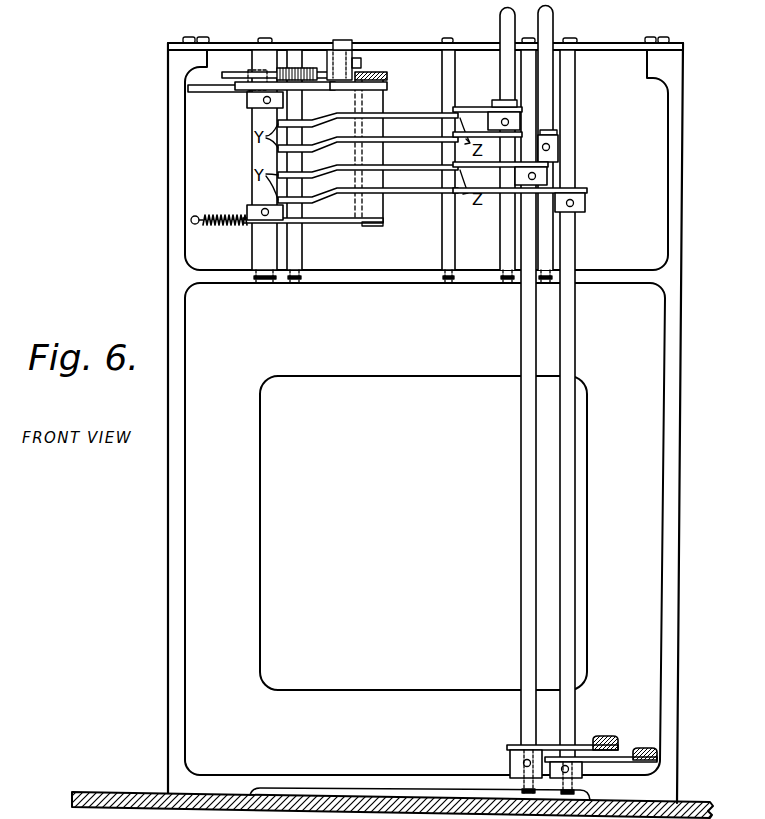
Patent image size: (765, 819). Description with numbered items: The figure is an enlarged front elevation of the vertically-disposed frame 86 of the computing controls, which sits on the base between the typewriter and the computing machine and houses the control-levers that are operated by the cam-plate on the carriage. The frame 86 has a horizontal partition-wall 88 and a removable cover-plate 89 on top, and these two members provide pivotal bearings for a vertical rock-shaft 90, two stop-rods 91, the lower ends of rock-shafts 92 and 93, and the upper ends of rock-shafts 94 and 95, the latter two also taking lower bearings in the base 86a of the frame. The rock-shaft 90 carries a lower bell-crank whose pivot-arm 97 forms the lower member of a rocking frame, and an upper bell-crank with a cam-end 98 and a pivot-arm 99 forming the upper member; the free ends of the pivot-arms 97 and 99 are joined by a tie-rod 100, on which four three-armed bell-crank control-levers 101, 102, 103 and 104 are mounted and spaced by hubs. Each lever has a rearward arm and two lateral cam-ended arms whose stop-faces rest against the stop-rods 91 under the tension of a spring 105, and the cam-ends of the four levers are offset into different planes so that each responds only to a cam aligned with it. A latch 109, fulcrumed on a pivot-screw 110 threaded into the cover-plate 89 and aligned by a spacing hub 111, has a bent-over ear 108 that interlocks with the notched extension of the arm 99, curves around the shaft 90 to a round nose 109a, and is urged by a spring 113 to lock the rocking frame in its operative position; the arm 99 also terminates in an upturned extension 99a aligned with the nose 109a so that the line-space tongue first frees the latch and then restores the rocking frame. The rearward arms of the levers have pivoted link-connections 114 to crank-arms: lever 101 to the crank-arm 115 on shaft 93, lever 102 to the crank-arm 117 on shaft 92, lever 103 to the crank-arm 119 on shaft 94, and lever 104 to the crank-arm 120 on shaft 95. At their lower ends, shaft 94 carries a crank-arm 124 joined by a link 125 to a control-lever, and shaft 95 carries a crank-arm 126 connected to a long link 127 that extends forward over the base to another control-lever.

The frame 86 is at (425, 423).
The base of the frame 86a is at (413, 786).
The horizontal partition-wall 88 is at (370, 283).
The cover-plate 89 is at (222, 44).
The rock-shaft 90 is at (252, 247).
The stop-rods 91 is at (302, 245).
The rock-shaft 92 is at (500, 27).
The rock-shaft 93 is at (553, 27).
The rock-shaft 94 is at (521, 347).
The rock-shaft 95 is at (575, 347).
The pivot-arm 97 is at (343, 222).
The cam-end 98 is at (203, 92).
The pivot-arm 99 is at (322, 91).
The extension 99a is at (384, 73).
The tie-rod 100 is at (358, 92).
The bell-crank control-lever 101 is at (413, 136).
The bell-crank control-lever 102 is at (413, 112).
The bell-crank control-lever 103 is at (407, 165).
The bell-crank control-lever 104 is at (403, 194).
The spring 105 is at (217, 215).
The bent-over ear 108 is at (258, 96).
The latch 109 is at (322, 67).
The round nose 109a is at (228, 73).
The pivot-screw 110 is at (344, 43).
The spacing hub 111 is at (354, 63).
The spring 113 is at (308, 67).
The link-connection 114 is at (485, 128).
The crank-arm 115 is at (558, 141).
The crank-arm 117 is at (500, 112).
The crank-arm 119 is at (550, 166).
The crank-arm 120 is at (587, 192).
The crank-arm 124 is at (511, 746).
The link 125 is at (597, 738).
The crank-arm 126 is at (626, 757).
The long link 127 is at (657, 759).